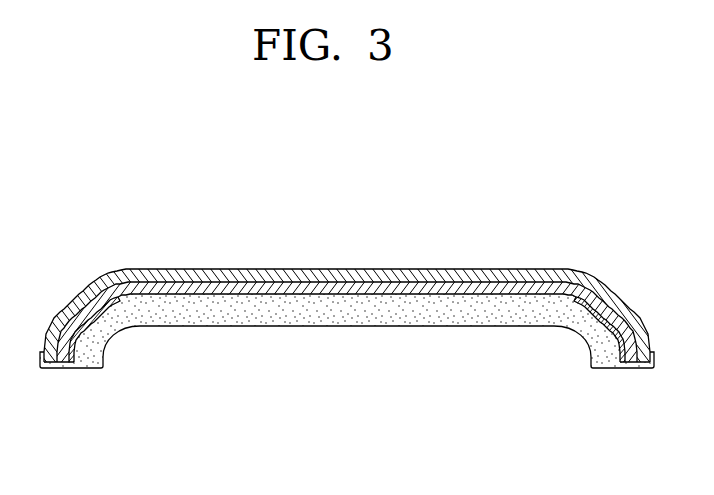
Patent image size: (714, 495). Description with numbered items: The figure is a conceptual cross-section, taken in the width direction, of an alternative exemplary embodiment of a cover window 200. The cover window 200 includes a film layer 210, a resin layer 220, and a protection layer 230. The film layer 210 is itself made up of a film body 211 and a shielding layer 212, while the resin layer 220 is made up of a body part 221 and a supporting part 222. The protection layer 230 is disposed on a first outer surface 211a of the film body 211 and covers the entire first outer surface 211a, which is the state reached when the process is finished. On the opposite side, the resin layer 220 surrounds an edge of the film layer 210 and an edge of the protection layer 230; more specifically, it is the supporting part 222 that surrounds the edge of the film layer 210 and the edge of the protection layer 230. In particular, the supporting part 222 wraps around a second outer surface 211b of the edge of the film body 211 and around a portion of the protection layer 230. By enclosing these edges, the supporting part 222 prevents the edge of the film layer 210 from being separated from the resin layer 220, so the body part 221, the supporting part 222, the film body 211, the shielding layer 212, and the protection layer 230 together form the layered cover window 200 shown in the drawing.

The cover window 200 is at (68, 170).
The film layer 210 is at (505, 199).
The film body 211 is at (357, 247).
The first outer surface 211a is at (391, 282).
The second outer surface 211b is at (391, 294).
The shielding layer 212 is at (600, 298).
The resin layer 220 is at (273, 417).
The body part 221 is at (257, 307).
The supporting part 222 is at (68, 371).
The protection layer 230 is at (192, 276).